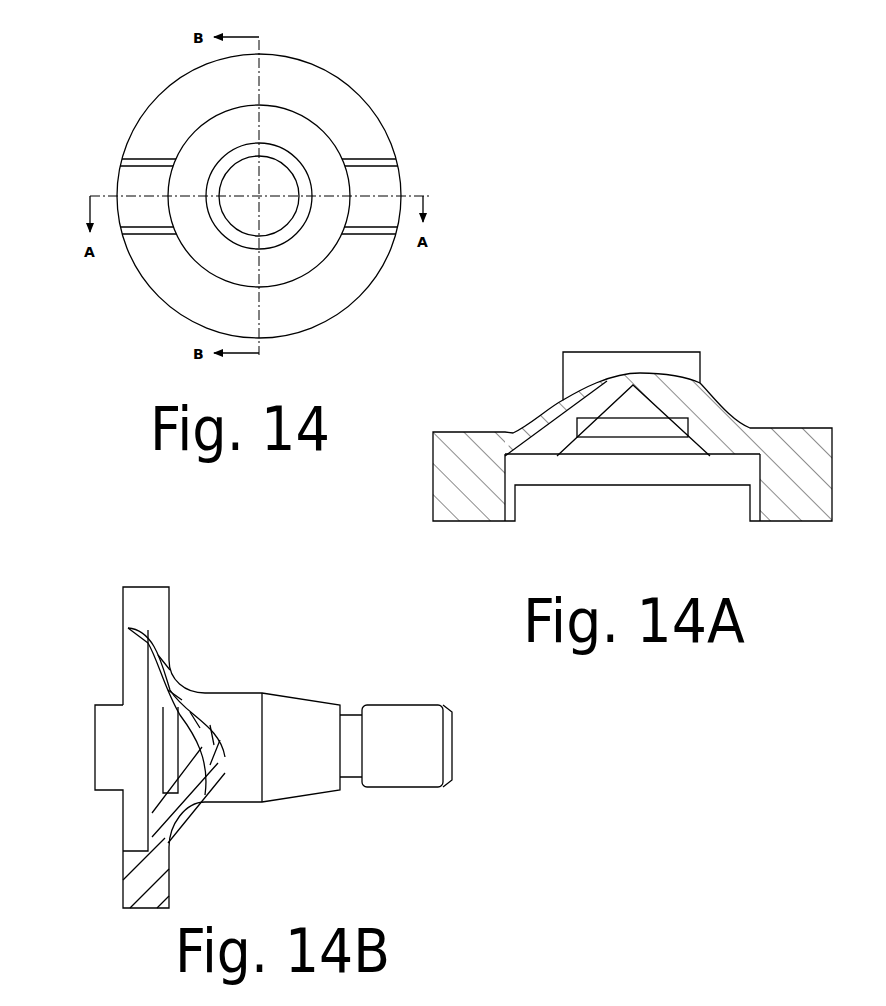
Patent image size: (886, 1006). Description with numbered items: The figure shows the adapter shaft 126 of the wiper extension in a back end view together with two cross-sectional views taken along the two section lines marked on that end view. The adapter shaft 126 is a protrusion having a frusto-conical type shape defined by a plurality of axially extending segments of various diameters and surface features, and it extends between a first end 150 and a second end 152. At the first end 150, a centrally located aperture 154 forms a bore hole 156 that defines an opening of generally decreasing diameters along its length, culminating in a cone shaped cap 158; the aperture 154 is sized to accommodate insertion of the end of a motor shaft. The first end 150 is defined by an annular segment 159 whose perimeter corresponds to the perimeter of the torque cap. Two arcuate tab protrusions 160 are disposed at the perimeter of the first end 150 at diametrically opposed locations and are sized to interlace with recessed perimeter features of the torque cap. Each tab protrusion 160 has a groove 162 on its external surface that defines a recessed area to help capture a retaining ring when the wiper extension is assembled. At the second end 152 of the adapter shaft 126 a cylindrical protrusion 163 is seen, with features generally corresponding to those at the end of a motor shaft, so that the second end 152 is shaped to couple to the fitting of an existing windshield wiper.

In FIG. 14, the adapter shaft 126 is at (302, 77).
In FIG. 14A, the adapter shaft 126 is at (756, 437).
In FIG. 14B, the adapter shaft 126 is at (235, 707).
In FIG. 14B, the first end 150 is at (62, 767).
In FIG. 14B, the second end 152 is at (466, 743).
In FIG. 14, the centrally located aperture 154 is at (313, 271).
In FIG. 14, the bore hole 156 is at (288, 176).
In FIG. 14A, the bore hole 156 is at (635, 502).
In FIG. 14A, the cone shaped cap 158 is at (665, 407).
In FIG. 14B, the cone shaped cap 158 is at (193, 722).
In FIG. 14B, the annular segment 159 is at (150, 598).
In FIG. 14, the arcuate tab protrusion 160 is at (128, 178).
In FIG. 14B, the arcuate tab protrusion 160 is at (98, 768).
In FIG. 14A, the groove 162 is at (442, 498).
In FIG. 14B, the cylindrical protrusion 163 is at (407, 777).